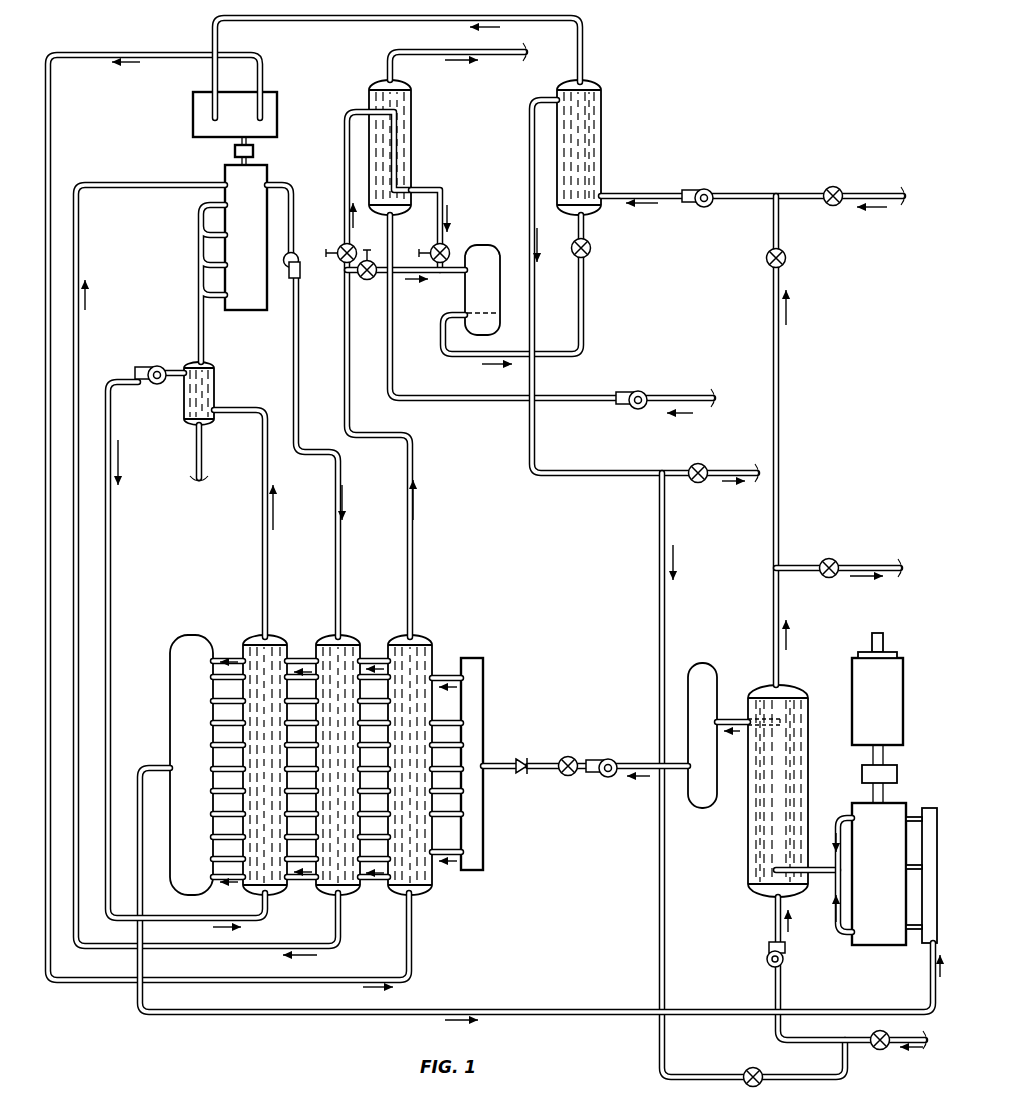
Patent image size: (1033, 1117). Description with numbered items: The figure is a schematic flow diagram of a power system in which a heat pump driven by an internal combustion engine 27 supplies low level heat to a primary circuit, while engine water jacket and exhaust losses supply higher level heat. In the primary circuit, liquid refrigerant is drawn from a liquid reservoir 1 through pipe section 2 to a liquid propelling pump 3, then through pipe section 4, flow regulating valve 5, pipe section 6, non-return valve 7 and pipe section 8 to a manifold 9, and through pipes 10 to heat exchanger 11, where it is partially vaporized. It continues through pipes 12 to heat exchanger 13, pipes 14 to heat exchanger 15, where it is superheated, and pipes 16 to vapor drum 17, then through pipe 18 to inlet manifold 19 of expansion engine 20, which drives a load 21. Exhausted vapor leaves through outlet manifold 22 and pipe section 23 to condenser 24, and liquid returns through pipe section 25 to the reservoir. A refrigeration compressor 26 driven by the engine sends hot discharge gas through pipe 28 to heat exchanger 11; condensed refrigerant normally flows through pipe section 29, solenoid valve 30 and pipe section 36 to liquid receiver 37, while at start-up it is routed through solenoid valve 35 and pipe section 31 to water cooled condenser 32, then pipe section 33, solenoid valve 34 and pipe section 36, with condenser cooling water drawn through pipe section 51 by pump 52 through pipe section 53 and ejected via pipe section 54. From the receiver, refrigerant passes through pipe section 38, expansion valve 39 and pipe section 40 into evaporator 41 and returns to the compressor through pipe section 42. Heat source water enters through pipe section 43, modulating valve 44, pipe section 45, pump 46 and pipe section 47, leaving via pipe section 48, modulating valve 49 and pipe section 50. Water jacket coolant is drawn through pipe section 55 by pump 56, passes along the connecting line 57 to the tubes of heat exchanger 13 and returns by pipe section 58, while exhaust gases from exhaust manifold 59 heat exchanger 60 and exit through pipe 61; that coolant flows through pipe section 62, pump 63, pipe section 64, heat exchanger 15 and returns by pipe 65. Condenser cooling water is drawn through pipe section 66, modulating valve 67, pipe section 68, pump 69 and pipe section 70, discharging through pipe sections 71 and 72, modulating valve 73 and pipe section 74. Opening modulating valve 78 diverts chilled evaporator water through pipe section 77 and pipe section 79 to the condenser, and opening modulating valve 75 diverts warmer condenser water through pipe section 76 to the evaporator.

The liquid reservoir 1 is at (700, 664).
The pipe section 2 is at (628, 766).
The liquid propelling pump 3 is at (599, 760).
The pipe section 4 is at (580, 772).
The flow regulating valve 5 is at (566, 757).
The pipe section 6 is at (537, 772).
The non-return valve 7 is at (516, 758).
The pipe section 8 is at (500, 772).
The manifold 9 is at (484, 698).
The pipes 10 is at (446, 668).
The heat exchanger 11 is at (412, 636).
The pipes 12 is at (372, 660).
The heat exchanger 13 is at (338, 636).
The pipes 14 is at (300, 660).
The heat exchanger 15 is at (270, 636).
The pipes 16 is at (227, 658).
The vapor drum 17 is at (190, 636).
The pipe 18 is at (305, 1016).
The expansion engine inlet manifold 19 is at (926, 944).
The expansion engine 20 is at (880, 946).
The load 21 is at (890, 652).
The outlet manifold 22 is at (838, 818).
The pipe section 23 is at (812, 880).
The condenser 24 is at (750, 892).
The pipe section 25 is at (728, 720).
The refrigeration compressor 26 is at (193, 100).
The internal combustion engine 27 is at (225, 168).
The pipe 28 is at (266, 60).
The pipe section 29 is at (414, 446).
The solenoid valve 30 is at (366, 281).
The pipe section 31 is at (342, 112).
The water cooled condenser 32 is at (372, 84).
The pipe section 33 is at (440, 196).
The solenoid valve 34 is at (450, 250).
The solenoid valve 35 is at (339, 250).
The pipe section 36 is at (432, 278).
The liquid receiver 37 is at (486, 255).
The pipe section 38 is at (450, 360).
The expansion valve 39 is at (587, 254).
The pipe section 40 is at (588, 242).
The evaporator 41 is at (588, 84).
The pipe section 42 is at (586, 24).
The pipe section 43 is at (878, 196).
The modulating valve 44 is at (835, 190).
The pipe section 45 is at (766, 196).
The pump 46 is at (699, 192).
The pipe section 47 is at (644, 196).
The pipe section 48 is at (530, 104).
The modulating valve 49 is at (692, 466).
The pipe section 50 is at (728, 472).
The pipe section 51 is at (688, 398).
The pump 52 is at (636, 392).
The pipe section 53 is at (557, 398).
The pipe section 54 is at (476, 52).
The pipe section 55 is at (291, 188).
The pump 56 is at (301, 278).
The line 57 is at (300, 390).
The pipe section 58 is at (132, 185).
The exhaust manifold 59 is at (199, 232).
The heat exchanger 60 is at (208, 364).
The pipe 61 is at (203, 464).
The pipe section 62 is at (174, 372).
The pump 63 is at (147, 366).
The pipe section 64 is at (108, 384).
The pipe 65 is at (248, 410).
The pipe section 66 is at (908, 1040).
The modulating valve 67 is at (886, 1050).
The pipe section 68 is at (772, 1034).
The pump 69 is at (768, 962).
The pipe section 70 is at (774, 930).
The pipe section 71 is at (776, 588).
The pipe section 72 is at (790, 566).
The modulating valve 73 is at (834, 558).
The pipe section 74 is at (870, 566).
The modulating valve 75 is at (786, 262).
The pipe section 76 is at (782, 236).
The pipe section 77 is at (660, 1082).
The modulating valve 78 is at (748, 1088).
The pipe section 79 is at (795, 1085).